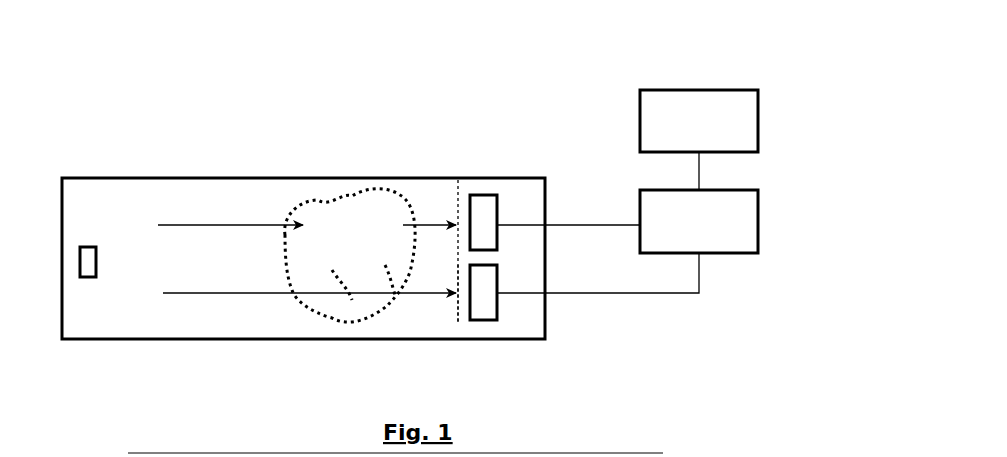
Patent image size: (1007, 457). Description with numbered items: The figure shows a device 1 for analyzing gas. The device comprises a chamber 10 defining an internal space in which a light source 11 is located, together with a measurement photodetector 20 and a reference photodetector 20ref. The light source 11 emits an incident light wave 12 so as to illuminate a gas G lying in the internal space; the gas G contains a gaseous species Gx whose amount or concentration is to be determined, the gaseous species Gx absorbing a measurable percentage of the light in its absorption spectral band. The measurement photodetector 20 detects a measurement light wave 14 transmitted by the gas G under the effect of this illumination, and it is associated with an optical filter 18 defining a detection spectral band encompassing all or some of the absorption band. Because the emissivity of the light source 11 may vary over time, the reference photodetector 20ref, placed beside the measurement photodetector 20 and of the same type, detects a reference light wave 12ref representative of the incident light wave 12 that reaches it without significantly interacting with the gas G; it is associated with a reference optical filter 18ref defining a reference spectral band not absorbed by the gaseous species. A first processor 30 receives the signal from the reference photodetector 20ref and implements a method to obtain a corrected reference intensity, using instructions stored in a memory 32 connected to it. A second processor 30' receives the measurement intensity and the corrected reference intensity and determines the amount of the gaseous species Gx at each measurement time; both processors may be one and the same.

The device for analyzing gas 1 is at (112, 154).
The chamber 10 is at (297, 344).
The light source 11 is at (88, 284).
The incident light wave 12 is at (276, 221).
The reference light wave 12ref is at (183, 299).
The measurement light wave 14 is at (418, 221).
The optical filter 18 is at (455, 193).
The reference optical filter 18ref is at (461, 320).
The measurement photodetector 20 is at (483, 193).
The reference photodetector 20ref is at (488, 299).
The first processor 30 is at (745, 254).
The second processor 30' is at (699, 221).
The memory 32 is at (690, 118).
The gas G is at (337, 221).
The gaseous species Gx is at (366, 205).